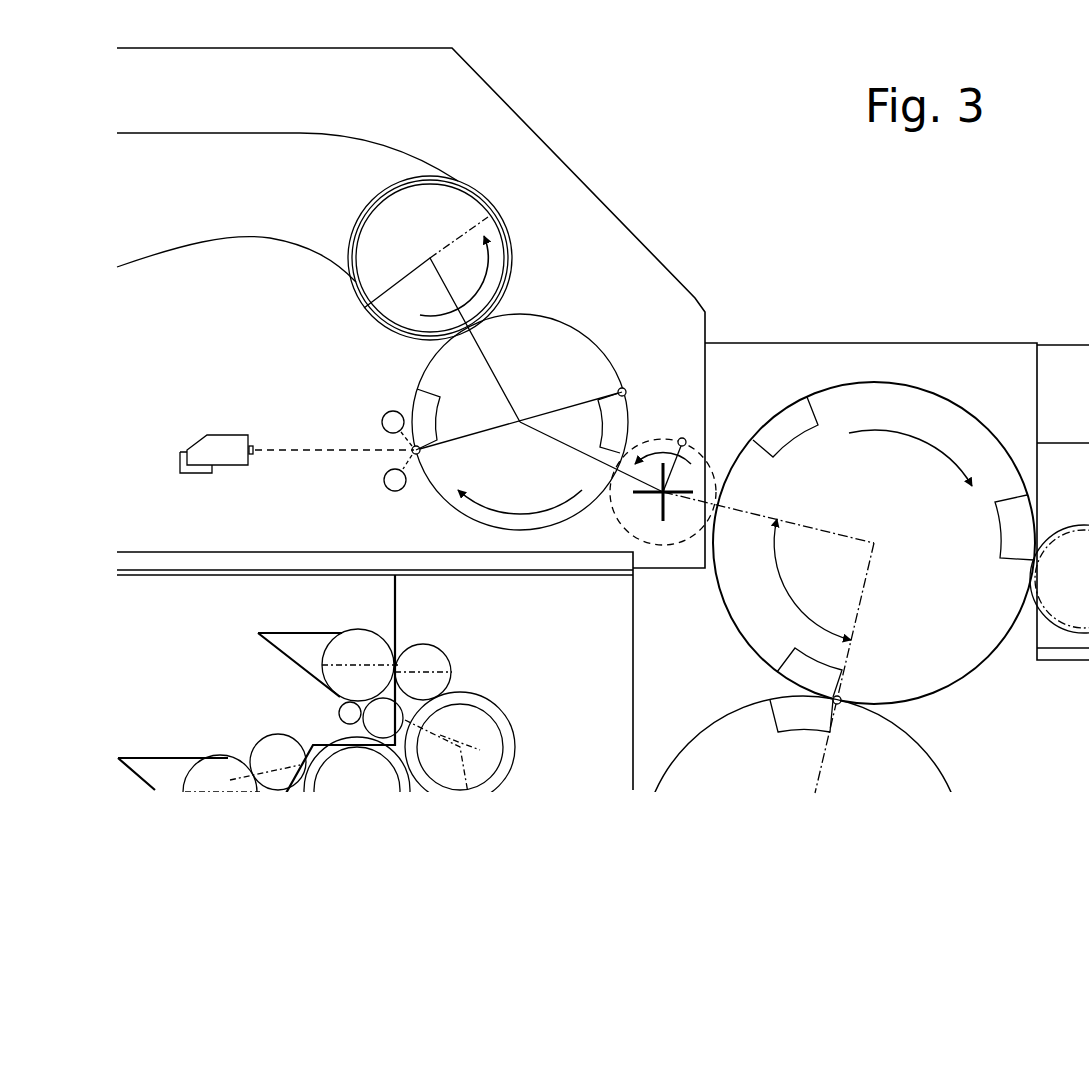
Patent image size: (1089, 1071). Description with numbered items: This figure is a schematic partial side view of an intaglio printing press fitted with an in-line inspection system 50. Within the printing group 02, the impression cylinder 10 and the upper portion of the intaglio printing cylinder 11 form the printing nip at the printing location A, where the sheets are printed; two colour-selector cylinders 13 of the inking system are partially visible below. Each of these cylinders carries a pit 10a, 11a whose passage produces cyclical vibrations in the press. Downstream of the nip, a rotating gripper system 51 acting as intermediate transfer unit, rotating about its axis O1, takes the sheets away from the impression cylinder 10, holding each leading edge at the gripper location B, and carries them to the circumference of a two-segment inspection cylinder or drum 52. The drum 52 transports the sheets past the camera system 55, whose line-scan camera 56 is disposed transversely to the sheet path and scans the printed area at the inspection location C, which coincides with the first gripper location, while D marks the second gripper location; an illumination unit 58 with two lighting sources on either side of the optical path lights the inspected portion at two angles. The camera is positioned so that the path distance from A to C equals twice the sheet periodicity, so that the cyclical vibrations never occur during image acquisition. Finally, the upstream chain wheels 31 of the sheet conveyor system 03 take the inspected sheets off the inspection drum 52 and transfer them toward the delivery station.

The sheet conveyor system 03 is at (219, 129).
The inspection system 50 is at (537, 344).
The printing group 02 is at (1017, 426).
The chain wheels 31 is at (369, 314).
The inspection cylinder or drum 52 is at (428, 388).
The camera system 55 is at (257, 413).
The line-scan camera 56 is at (211, 441).
The illumination unit 58 is at (384, 481).
The impression cylinder 10 is at (874, 577).
The cylinder pit 10a is at (834, 674).
The rotating gripper system 51 is at (726, 503).
The intaglio printing cylinder 11 is at (810, 845).
The cylinder pit 11a is at (783, 700).
The colour-selector cylinders 13 is at (487, 703).
The printing location A is at (842, 698).
The gripper location B is at (681, 438).
The inspection location C is at (420, 452).
The second gripper location D is at (623, 391).
The axis of rotation of the rotating gripper system O1 is at (658, 497).